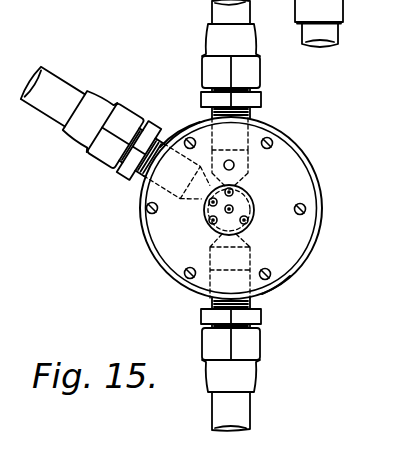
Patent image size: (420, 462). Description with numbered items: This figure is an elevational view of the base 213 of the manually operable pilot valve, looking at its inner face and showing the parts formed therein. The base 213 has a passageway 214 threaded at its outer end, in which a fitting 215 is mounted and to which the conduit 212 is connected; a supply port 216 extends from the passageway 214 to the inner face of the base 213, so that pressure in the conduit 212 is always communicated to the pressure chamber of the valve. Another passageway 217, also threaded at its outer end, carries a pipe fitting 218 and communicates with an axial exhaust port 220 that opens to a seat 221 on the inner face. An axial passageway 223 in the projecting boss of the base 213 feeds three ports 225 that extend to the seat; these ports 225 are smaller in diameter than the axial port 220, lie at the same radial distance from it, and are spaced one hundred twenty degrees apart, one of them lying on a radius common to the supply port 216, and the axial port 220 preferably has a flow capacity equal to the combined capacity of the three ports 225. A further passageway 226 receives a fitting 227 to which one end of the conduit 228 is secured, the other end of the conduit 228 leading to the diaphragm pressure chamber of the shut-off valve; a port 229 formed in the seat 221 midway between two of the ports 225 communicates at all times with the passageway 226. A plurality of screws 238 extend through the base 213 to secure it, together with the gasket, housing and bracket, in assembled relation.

The conduit 212 is at (215, 44).
The base 213 is at (297, 152).
The passageway 214 is at (261, 106).
The fitting 215 is at (256, 98).
The supply port 216 is at (235, 166).
The passageway 217 is at (272, 288).
The pipe fitting 218 is at (208, 314).
The axial exhaust port 220 is at (232, 207).
The seat 221 is at (208, 224).
The axial passageway 223 is at (247, 220).
The ports 225 is at (232, 190).
The passageway 226 is at (186, 130).
The fitting 227 is at (116, 158).
The conduit 228 is at (83, 107).
The port 229 is at (224, 186).
The screws 238 is at (305, 209).